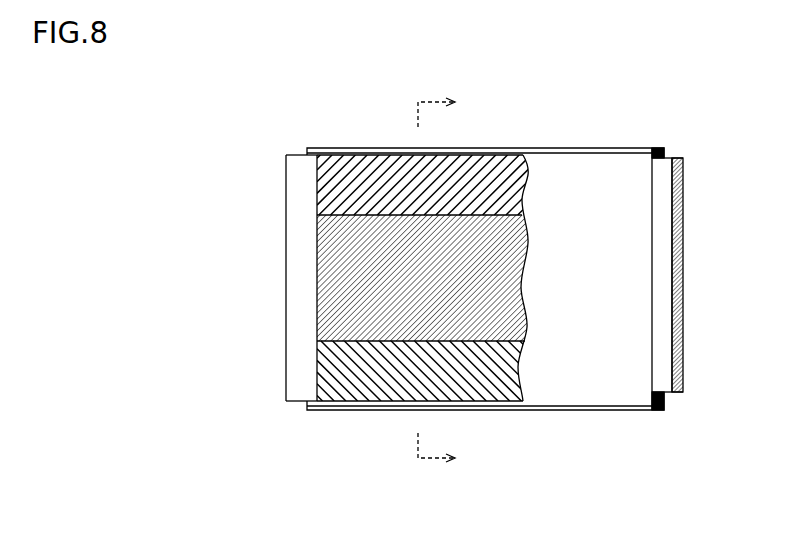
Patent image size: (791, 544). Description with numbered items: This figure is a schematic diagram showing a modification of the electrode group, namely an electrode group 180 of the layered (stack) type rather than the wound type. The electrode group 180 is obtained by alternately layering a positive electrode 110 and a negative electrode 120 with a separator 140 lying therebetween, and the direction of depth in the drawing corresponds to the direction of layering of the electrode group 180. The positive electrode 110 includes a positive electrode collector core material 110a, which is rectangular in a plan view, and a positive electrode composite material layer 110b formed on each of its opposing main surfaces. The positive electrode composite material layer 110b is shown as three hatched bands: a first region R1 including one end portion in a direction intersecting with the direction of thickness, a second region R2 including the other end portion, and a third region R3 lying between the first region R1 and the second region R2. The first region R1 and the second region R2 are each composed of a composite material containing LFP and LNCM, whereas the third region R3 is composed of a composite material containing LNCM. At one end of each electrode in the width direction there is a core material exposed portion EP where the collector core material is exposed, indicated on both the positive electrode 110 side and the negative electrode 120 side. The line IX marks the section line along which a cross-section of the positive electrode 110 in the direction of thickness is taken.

The positive electrode 110 is at (137, 253).
The positive electrode collector core material 110a is at (292, 375).
The positive electrode composite material layer 110b is at (205, 228).
The first region R1 is at (327, 358).
The second region R2 is at (348, 195).
The third region R3 is at (370, 278).
The negative electrode 120 is at (670, 162).
The separator 140 is at (608, 168).
The electrode group 180 is at (650, 463).
The core material exposed portion EP is at (305, 186).
The line IX- IX is at (453, 281).